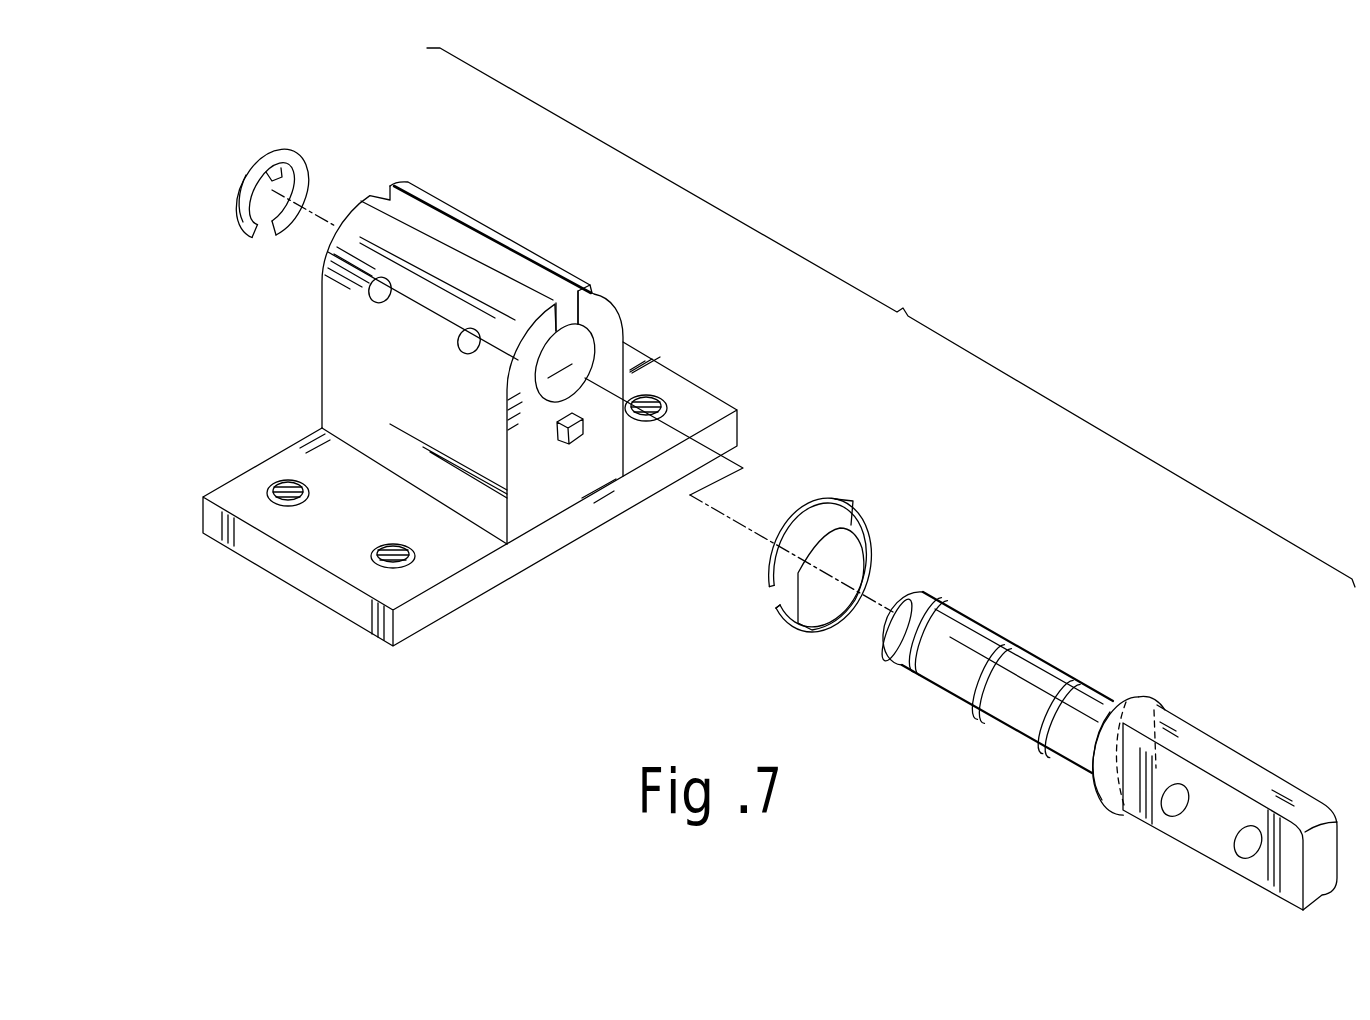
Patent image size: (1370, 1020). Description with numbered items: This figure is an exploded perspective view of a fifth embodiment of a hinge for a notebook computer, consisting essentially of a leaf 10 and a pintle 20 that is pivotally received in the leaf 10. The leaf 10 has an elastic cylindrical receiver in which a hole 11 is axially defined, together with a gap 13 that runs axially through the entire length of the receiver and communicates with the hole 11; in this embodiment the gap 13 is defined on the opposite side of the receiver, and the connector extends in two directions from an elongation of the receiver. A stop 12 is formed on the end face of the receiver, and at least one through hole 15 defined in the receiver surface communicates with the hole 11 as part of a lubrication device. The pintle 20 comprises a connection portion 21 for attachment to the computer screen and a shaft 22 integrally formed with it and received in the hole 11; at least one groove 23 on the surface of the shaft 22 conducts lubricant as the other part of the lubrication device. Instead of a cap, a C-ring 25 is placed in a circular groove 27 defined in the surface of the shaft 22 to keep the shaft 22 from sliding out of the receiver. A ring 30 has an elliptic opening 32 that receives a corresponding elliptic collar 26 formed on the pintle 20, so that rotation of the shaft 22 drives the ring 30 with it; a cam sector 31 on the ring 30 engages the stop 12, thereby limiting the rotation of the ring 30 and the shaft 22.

The leaf 10 is at (748, 354).
The hole 11 is at (588, 343).
The stop 12 is at (576, 446).
The gap 13 is at (533, 282).
The through hole 15 is at (378, 302).
The pintle 20 is at (1260, 692).
The connection portion 21 is at (1253, 780).
The shaft 22 is at (1043, 688).
The groove 23 is at (1010, 648).
The C-ring 25 is at (246, 238).
The elliptic collar 26 is at (1128, 713).
The circular groove 27 is at (946, 596).
The ring 30 is at (896, 514).
The cam sector 31 is at (822, 522).
The elliptic opening 32 is at (786, 612).